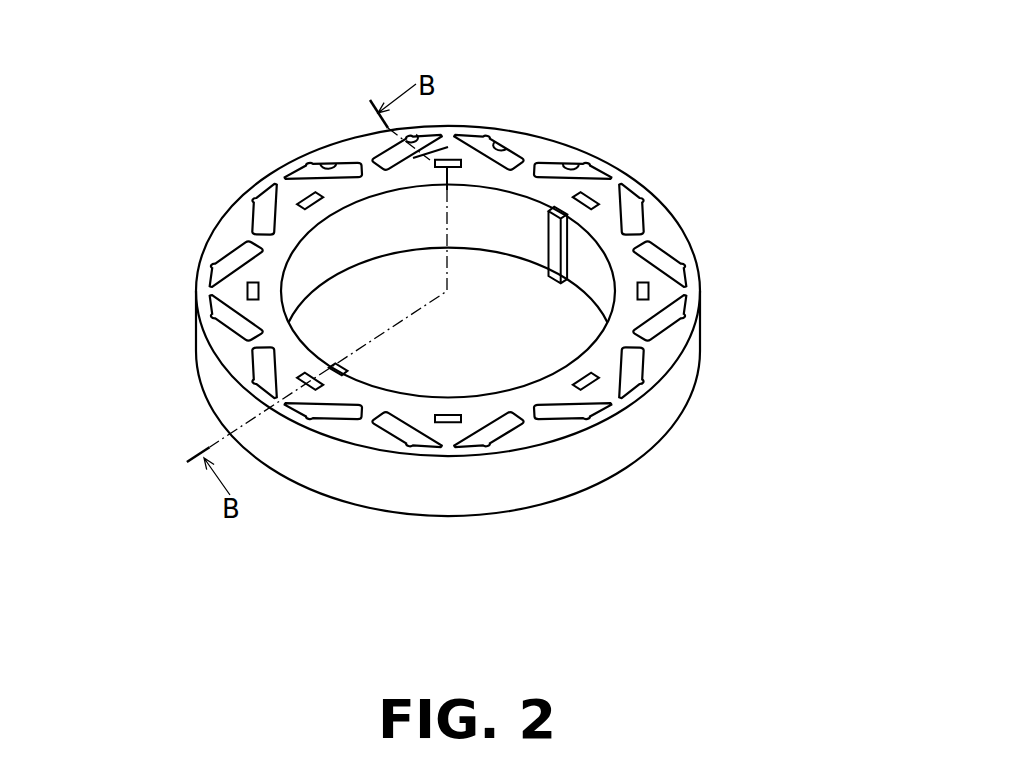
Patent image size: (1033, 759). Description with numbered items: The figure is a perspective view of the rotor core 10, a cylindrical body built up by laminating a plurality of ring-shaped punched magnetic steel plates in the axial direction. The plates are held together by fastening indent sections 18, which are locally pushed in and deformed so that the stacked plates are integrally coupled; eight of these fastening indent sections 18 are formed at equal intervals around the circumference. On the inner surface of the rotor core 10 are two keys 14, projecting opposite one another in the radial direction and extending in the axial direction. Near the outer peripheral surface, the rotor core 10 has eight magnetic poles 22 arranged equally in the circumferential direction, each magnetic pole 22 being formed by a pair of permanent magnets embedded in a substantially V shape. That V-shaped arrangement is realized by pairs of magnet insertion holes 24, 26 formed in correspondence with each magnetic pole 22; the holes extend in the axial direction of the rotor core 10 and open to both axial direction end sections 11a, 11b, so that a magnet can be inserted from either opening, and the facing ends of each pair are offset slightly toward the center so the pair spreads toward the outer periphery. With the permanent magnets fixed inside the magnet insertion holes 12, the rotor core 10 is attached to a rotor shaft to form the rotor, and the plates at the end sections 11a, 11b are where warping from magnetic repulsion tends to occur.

The rotor core 10 is at (492, 291).
The axial direction end section 11a is at (687, 290).
The axial direction end section 11b is at (665, 437).
The magnet insertion holes 12 is at (454, 97).
The key 14 is at (556, 272).
The fastening indent section 18 is at (298, 194).
The magnetic pole 22 is at (358, 145).
The magnet insertion hole 24 is at (325, 164).
The magnet insertion hole 26 is at (420, 138).